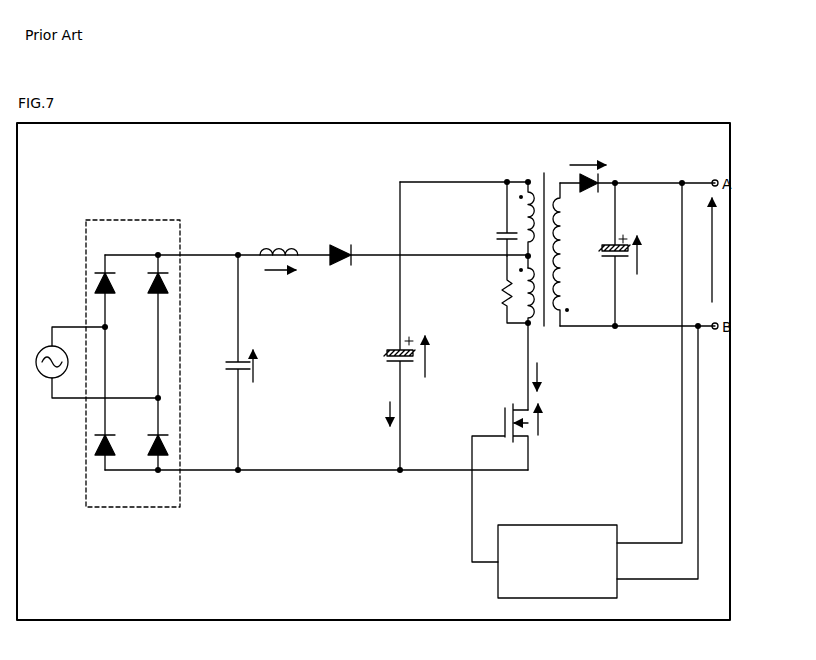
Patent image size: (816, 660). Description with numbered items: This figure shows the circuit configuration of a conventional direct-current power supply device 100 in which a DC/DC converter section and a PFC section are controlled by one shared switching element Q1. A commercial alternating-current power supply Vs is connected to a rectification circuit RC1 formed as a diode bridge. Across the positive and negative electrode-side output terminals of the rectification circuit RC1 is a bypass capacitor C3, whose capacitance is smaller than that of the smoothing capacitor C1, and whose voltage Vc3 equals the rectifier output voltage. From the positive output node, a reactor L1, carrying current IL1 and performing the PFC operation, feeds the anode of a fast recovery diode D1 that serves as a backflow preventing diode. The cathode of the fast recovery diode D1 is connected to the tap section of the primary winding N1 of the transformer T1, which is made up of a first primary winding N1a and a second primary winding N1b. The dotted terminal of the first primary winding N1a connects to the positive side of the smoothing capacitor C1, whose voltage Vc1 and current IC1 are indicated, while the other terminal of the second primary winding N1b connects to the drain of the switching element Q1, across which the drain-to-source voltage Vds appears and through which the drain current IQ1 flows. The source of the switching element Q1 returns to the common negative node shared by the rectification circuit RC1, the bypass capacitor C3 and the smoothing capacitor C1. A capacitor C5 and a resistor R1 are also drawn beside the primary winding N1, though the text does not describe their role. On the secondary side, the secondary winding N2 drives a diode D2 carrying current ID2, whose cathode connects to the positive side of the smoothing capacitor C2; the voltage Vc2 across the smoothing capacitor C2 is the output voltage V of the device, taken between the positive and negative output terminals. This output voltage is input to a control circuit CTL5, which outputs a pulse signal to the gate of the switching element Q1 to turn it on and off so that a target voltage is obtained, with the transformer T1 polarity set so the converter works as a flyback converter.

The direct-current power supply device 100 is at (247, 586).
The commercial alternating-current power supply Vs is at (95, 362).
The rectification circuit RC1 is at (133, 354).
The bypass capacitor C3 is at (229, 362).
The voltage of the bypass capacitor Vc3 is at (268, 366).
The reactor L1 is at (298, 241).
The current of the reactor IL1 is at (280, 282).
The fast recovery diode D1 is at (341, 265).
The smoothing capacitor C1 is at (395, 326).
The voltage of the smoothing capacitor Vc1 is at (441, 356).
The current of the smoothing capacitor IC1 is at (375, 414).
The transformer T1 is at (513, 285).
The primary winding N1 is at (496, 296).
The first primary winding N1a is at (527, 225).
The second primary winding N1b is at (527, 288).
The secondary winding N2 is at (558, 266).
The capacitor C5 is at (497, 219).
The resistor R1 is at (504, 289).
The diode D2 is at (588, 194).
The current of the diode ID2 is at (588, 155).
The smoothing capacitor C2 is at (611, 254).
The voltage of the smoothing capacitor Vc2 is at (653, 255).
The output voltage V is at (720, 250).
The switching element Q1 is at (500, 473).
The drain current of the switching element IQ1 is at (553, 377).
The drain-to-source voltage Vds is at (554, 419).
The control circuit CTL5 is at (598, 390).